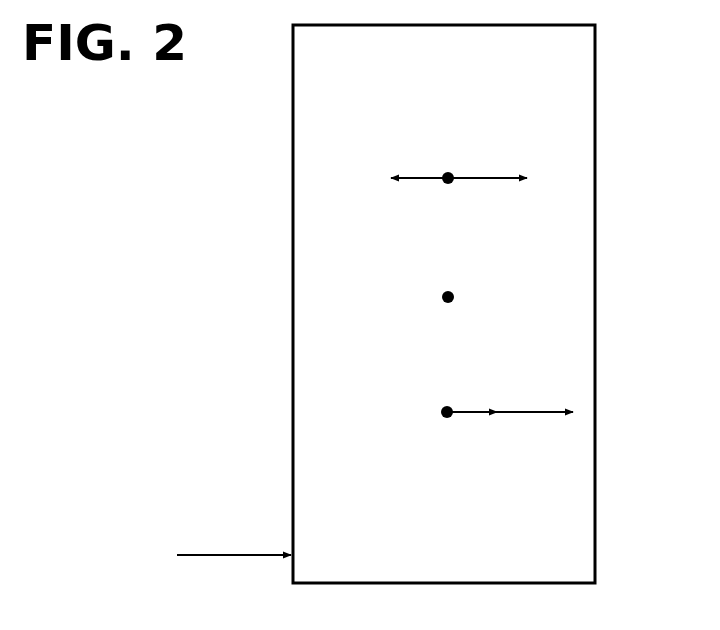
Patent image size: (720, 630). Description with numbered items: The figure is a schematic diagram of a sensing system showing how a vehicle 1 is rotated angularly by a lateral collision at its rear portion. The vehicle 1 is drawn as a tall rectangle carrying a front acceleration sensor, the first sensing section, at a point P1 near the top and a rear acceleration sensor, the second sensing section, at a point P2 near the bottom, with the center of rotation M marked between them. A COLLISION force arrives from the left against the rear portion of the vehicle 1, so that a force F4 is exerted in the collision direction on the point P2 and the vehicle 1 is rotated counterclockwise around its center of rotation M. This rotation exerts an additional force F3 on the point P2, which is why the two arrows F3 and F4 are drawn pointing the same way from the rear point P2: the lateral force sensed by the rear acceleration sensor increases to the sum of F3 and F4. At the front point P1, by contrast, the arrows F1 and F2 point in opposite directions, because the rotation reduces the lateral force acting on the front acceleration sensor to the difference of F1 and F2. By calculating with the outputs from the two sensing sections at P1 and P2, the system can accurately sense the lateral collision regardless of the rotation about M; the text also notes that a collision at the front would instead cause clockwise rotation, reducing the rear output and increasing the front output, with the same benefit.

The vehicle 1 is at (595, 375).
The point P1 is at (453, 161).
The point P2 is at (421, 418).
The center of rotation M is at (448, 278).
The force F1 is at (497, 157).
The force F2 is at (410, 158).
The force F3 is at (472, 412).
The force F4 is at (538, 412).
The collision force COLLISION is at (169, 558).